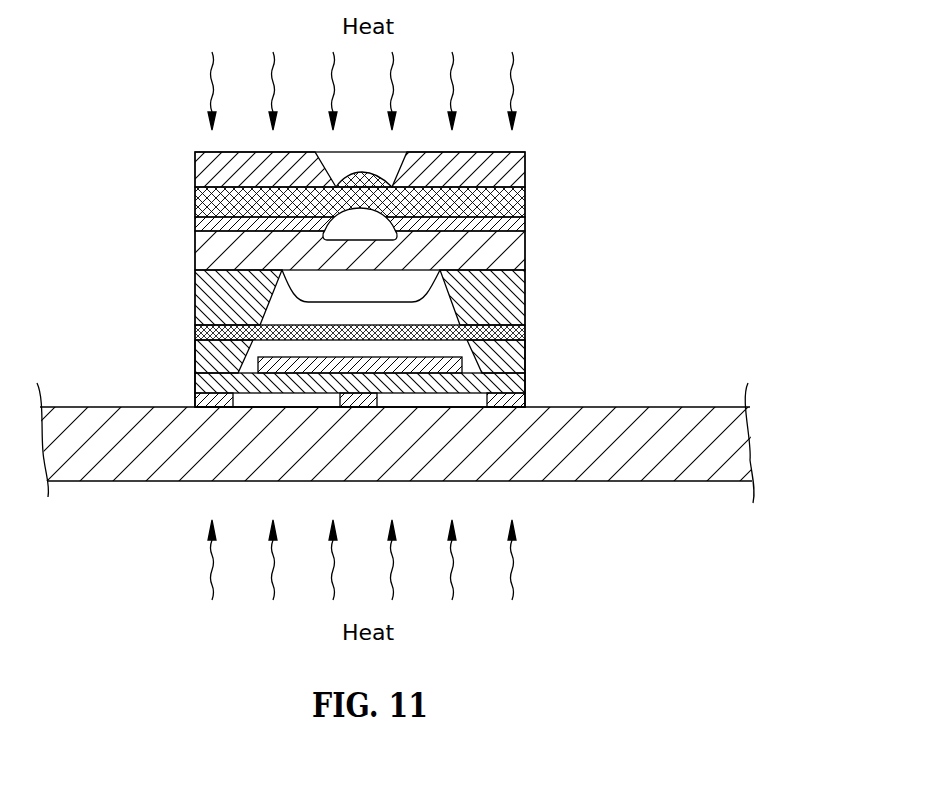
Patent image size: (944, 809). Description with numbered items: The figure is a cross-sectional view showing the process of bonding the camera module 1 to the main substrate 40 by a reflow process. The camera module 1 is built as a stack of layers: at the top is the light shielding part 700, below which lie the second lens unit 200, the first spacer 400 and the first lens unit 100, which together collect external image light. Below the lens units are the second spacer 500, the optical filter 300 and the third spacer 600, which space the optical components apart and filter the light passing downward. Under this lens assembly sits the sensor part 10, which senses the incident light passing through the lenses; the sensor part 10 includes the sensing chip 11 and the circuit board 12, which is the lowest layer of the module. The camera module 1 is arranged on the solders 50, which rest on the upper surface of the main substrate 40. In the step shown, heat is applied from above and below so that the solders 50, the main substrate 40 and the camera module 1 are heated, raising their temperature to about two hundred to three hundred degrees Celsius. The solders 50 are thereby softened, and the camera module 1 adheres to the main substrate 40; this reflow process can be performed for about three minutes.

The camera module 1 is at (554, 107).
The light shielding part 700 is at (527, 171).
The second lens unit 200 is at (527, 207).
The first spacer 400 is at (527, 232).
The first lens unit 100 is at (527, 258).
The second spacer 500 is at (527, 300).
The optical filter 300 is at (527, 332).
The third spacer 600 is at (527, 366).
The sensor part 10 is at (122, 331).
The sensing chip 11 is at (193, 343).
The circuit board 12 is at (193, 386).
The main substrate 40 is at (640, 409).
The solders 50 is at (513, 408).